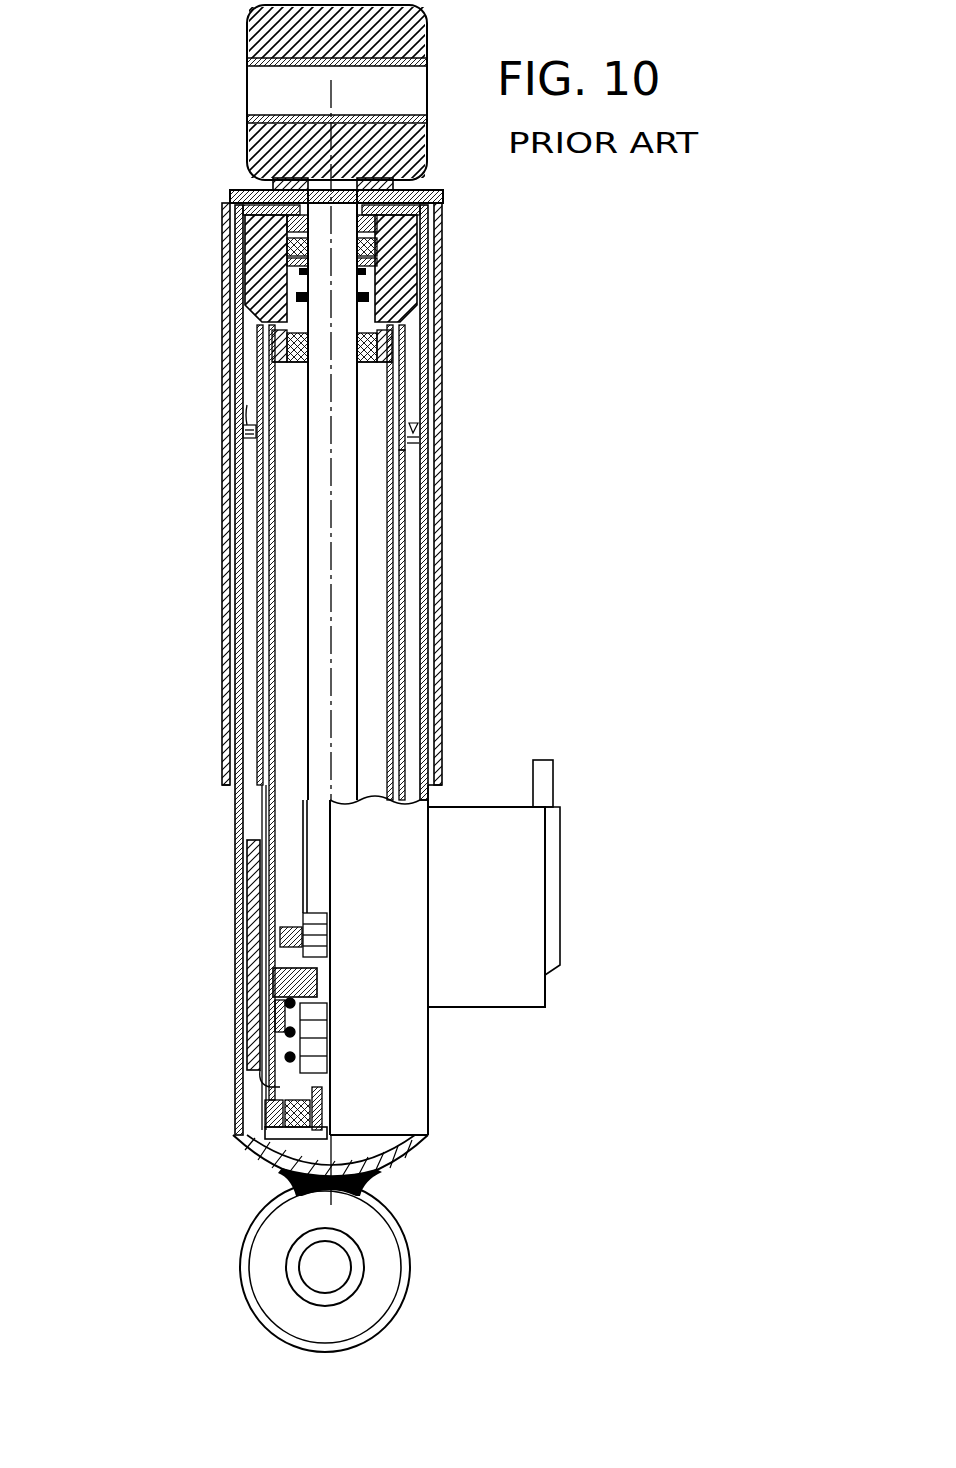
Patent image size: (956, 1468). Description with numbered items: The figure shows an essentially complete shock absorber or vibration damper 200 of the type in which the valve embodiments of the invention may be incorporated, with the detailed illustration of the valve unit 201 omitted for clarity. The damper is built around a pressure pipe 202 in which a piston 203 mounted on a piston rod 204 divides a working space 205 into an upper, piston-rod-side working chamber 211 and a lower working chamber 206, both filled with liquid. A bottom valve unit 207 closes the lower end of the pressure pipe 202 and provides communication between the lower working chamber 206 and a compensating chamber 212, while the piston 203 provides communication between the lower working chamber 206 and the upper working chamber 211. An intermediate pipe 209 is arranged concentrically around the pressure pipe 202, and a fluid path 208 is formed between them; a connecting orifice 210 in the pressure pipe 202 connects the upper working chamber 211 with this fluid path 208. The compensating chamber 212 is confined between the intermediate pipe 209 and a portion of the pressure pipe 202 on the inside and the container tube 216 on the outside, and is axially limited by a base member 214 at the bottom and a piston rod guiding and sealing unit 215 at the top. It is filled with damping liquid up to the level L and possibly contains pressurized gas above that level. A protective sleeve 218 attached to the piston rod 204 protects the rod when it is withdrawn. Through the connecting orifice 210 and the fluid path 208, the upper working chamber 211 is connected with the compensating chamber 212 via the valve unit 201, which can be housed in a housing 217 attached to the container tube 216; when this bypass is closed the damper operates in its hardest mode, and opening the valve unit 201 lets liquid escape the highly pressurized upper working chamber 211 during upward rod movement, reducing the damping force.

The shock absorber or vibration damper 200 is at (188, 660).
The valve unit 201 is at (495, 802).
The pressure pipe 202 is at (402, 600).
The piston 203 is at (258, 1012).
The piston rod 204 is at (348, 489).
The working space 205 is at (287, 462).
The lower working chamber 206 is at (277, 1080).
The bottom valve unit 207 is at (270, 1116).
The fluid path 208 is at (402, 640).
The intermediate pipe 209 is at (410, 686).
The connecting orifice 210 is at (400, 402).
The upper working chamber 211 is at (287, 568).
The compensating chamber 212 is at (412, 566).
The base member 214 is at (236, 1134).
The piston rod guiding and sealing unit 215 is at (407, 297).
The container tube 216 is at (433, 524).
The housing 217 is at (487, 1010).
The protective sleeve 218 is at (228, 198).
The level L is at (247, 405).